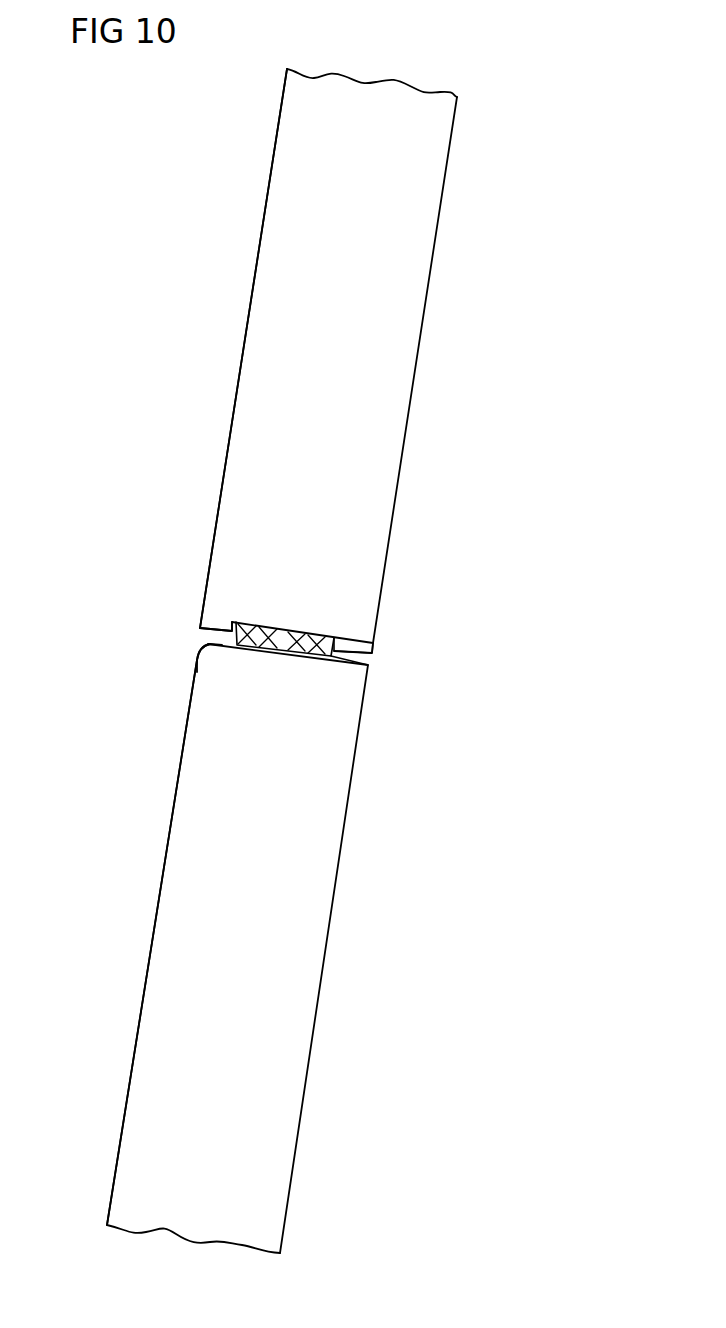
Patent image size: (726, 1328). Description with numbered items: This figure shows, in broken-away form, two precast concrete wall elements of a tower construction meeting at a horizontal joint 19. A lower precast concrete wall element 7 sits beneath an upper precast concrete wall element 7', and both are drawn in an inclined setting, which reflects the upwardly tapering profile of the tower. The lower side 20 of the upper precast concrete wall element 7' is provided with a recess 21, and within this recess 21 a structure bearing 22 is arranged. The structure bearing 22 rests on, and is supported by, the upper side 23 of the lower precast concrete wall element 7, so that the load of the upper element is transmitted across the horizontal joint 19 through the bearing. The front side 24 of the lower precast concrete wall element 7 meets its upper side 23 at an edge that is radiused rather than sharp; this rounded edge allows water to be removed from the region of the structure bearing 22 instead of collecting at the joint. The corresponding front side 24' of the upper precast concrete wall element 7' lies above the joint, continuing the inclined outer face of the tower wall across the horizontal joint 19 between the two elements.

The lower precast concrete wall element 7 is at (254, 948).
The upper precast concrete wall element 7' is at (351, 361).
The horizontal joint 19 is at (370, 666).
The lower side 20 is at (205, 633).
The recess 21 is at (373, 642).
The structure bearing 22 is at (277, 638).
The upper side 23 is at (208, 644).
The front side 24 is at (125, 942).
The front side 24' is at (218, 348).